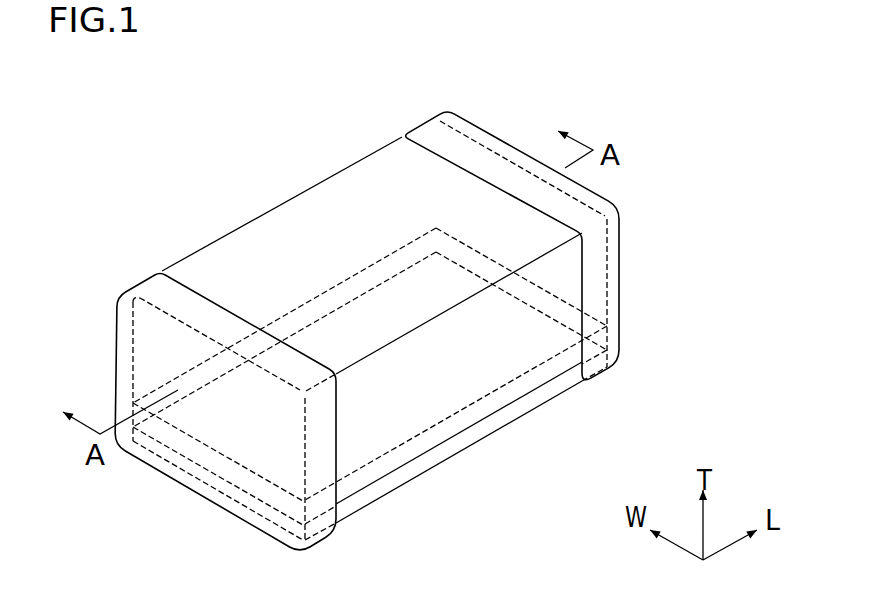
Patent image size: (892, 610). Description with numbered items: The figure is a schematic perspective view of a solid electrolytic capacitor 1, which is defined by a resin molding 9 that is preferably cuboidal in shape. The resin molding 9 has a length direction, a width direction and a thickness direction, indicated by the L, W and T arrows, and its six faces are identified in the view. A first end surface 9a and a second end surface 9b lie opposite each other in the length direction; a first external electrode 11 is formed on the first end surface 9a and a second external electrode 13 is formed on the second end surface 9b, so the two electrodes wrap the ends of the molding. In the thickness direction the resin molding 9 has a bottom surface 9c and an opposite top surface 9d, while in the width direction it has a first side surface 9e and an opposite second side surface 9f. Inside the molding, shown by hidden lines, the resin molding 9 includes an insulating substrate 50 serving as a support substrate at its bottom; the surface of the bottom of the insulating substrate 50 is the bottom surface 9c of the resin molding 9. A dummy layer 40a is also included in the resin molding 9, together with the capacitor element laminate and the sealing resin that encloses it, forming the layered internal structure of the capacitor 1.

The solid electrolytic capacitor 1 is at (105, 143).
The resin molding 9 is at (393, 183).
The first end surface 9a is at (217, 453).
The second end surface 9b is at (567, 272).
The bottom surface 9c is at (384, 462).
The top surface 9d is at (340, 200).
The first side surface 9e is at (417, 423).
The second side surface 9f is at (253, 263).
The first external electrode 11 is at (123, 330).
The second external electrode 13 is at (587, 197).
The dummy layer 40a is at (539, 386).
The insulating substrate 50 is at (494, 428).